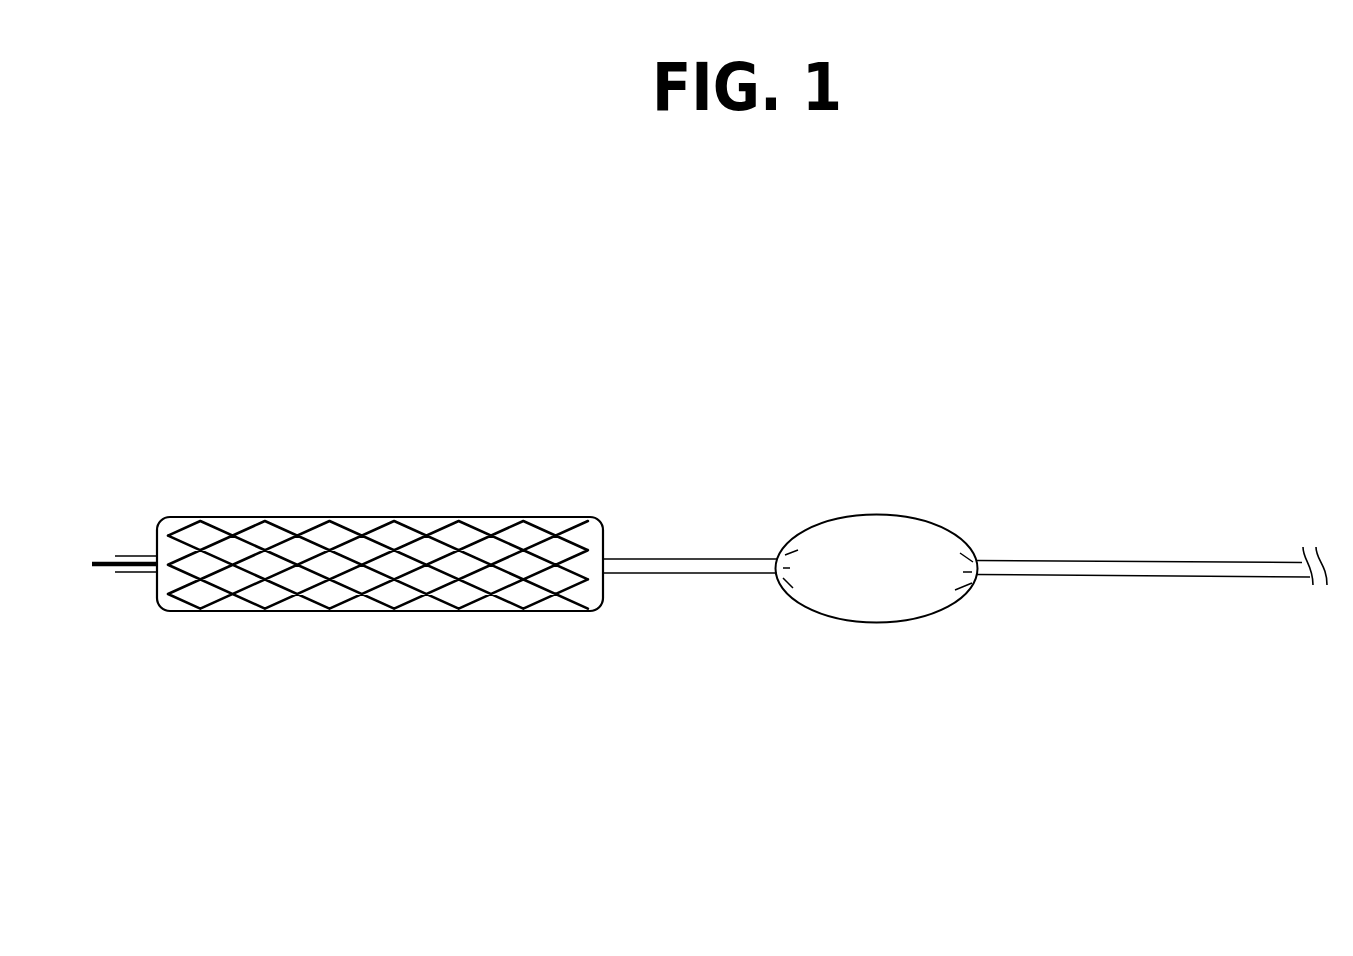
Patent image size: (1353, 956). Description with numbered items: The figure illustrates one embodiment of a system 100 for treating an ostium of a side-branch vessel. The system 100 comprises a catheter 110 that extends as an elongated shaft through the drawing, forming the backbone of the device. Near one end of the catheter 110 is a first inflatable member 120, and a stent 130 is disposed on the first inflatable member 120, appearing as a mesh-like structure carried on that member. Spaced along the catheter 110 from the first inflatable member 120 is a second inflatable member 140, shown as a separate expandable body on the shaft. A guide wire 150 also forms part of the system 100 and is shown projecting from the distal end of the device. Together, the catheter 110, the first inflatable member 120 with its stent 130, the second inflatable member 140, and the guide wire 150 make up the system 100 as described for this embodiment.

The system 100 is at (208, 244).
The catheter 110 is at (692, 532).
The first inflatable member 120 is at (161, 520).
The stent 130 is at (366, 515).
The second inflatable member 140 is at (867, 518).
The guide wire 150 is at (97, 567).